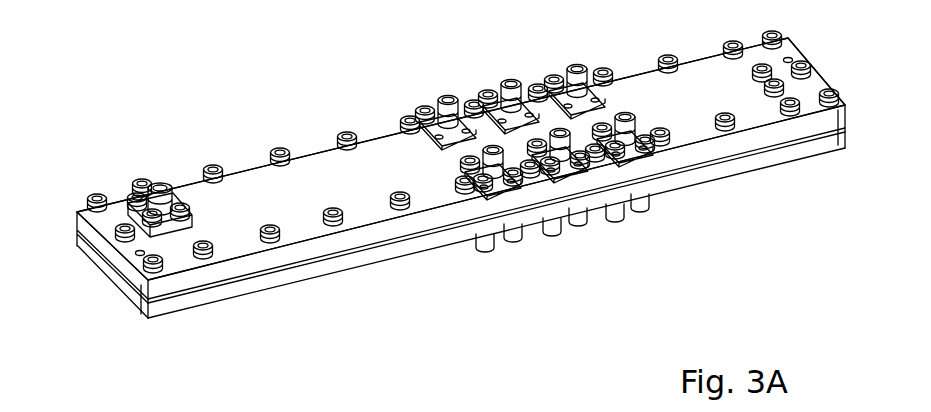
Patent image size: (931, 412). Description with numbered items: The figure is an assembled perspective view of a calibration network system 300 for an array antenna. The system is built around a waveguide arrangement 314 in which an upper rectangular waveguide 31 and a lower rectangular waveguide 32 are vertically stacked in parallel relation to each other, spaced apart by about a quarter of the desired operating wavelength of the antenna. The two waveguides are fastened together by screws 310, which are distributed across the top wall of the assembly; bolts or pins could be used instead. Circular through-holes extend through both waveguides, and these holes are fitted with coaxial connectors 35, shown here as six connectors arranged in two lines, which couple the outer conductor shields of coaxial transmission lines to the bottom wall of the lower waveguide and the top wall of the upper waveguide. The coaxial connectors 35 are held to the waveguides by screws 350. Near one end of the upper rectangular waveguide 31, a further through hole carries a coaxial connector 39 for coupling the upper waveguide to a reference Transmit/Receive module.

The calibration network system 300 is at (722, 187).
The upper rectangular waveguide 31 is at (700, 73).
The lower rectangular waveguide 32 is at (385, 262).
The waveguide arrangement 314 is at (124, 290).
The screws 310 is at (347, 135).
The screws 350 is at (550, 80).
The coaxial connectors 35 is at (636, 172).
The coaxial connector 39 is at (172, 222).